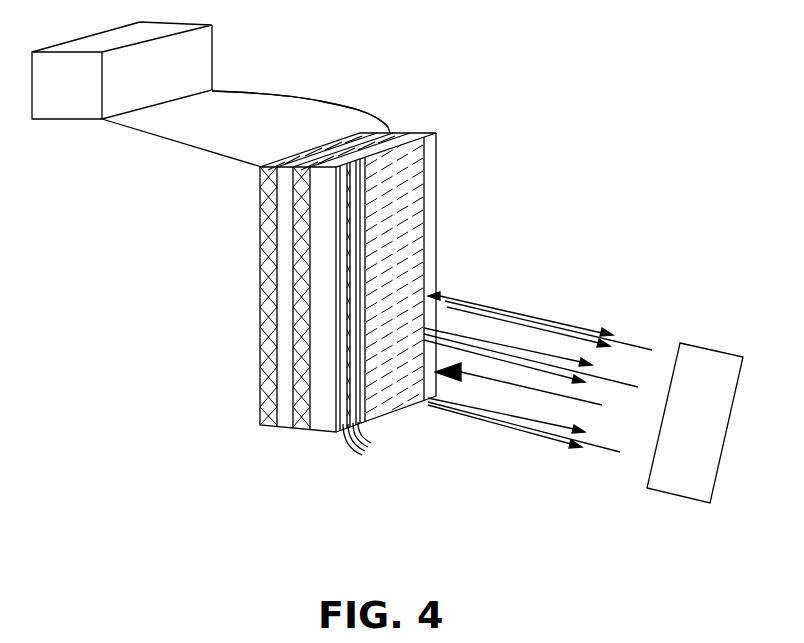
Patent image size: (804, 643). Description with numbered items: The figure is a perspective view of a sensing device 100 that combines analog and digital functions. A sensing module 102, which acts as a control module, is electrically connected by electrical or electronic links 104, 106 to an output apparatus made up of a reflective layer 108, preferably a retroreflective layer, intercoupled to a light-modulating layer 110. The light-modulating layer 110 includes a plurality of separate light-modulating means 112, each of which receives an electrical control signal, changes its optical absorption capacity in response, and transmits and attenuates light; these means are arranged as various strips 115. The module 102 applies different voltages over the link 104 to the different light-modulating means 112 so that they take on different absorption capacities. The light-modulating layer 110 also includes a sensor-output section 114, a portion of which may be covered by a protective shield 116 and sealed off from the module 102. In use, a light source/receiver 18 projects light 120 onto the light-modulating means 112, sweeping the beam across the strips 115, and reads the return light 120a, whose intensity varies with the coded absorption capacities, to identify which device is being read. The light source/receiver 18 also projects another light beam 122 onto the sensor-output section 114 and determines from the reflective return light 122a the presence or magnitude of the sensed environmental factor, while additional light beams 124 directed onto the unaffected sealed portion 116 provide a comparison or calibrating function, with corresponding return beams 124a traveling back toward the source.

The sensing device 100 is at (603, 43).
The sensing module 102 is at (58, 108).
The electrical or electronic link 104 is at (233, 131).
The electrical or electronic link 106 is at (275, 90).
The reflective layer 108 is at (236, 160).
The light-modulating layer 110 is at (240, 440).
The light-modulating means 112 is at (363, 192).
The sensor-output section 114 is at (415, 211).
The strips 115 is at (378, 449).
The protective shield 116 is at (544, 399).
The light source/receiver 18 is at (702, 358).
The light 120 is at (503, 421).
The return light 120a is at (518, 428).
The light beam 122 is at (535, 363).
The reflective return light 122a is at (455, 334).
The additional light beams 124 is at (500, 309).
The output beam rays 124a is at (543, 318).